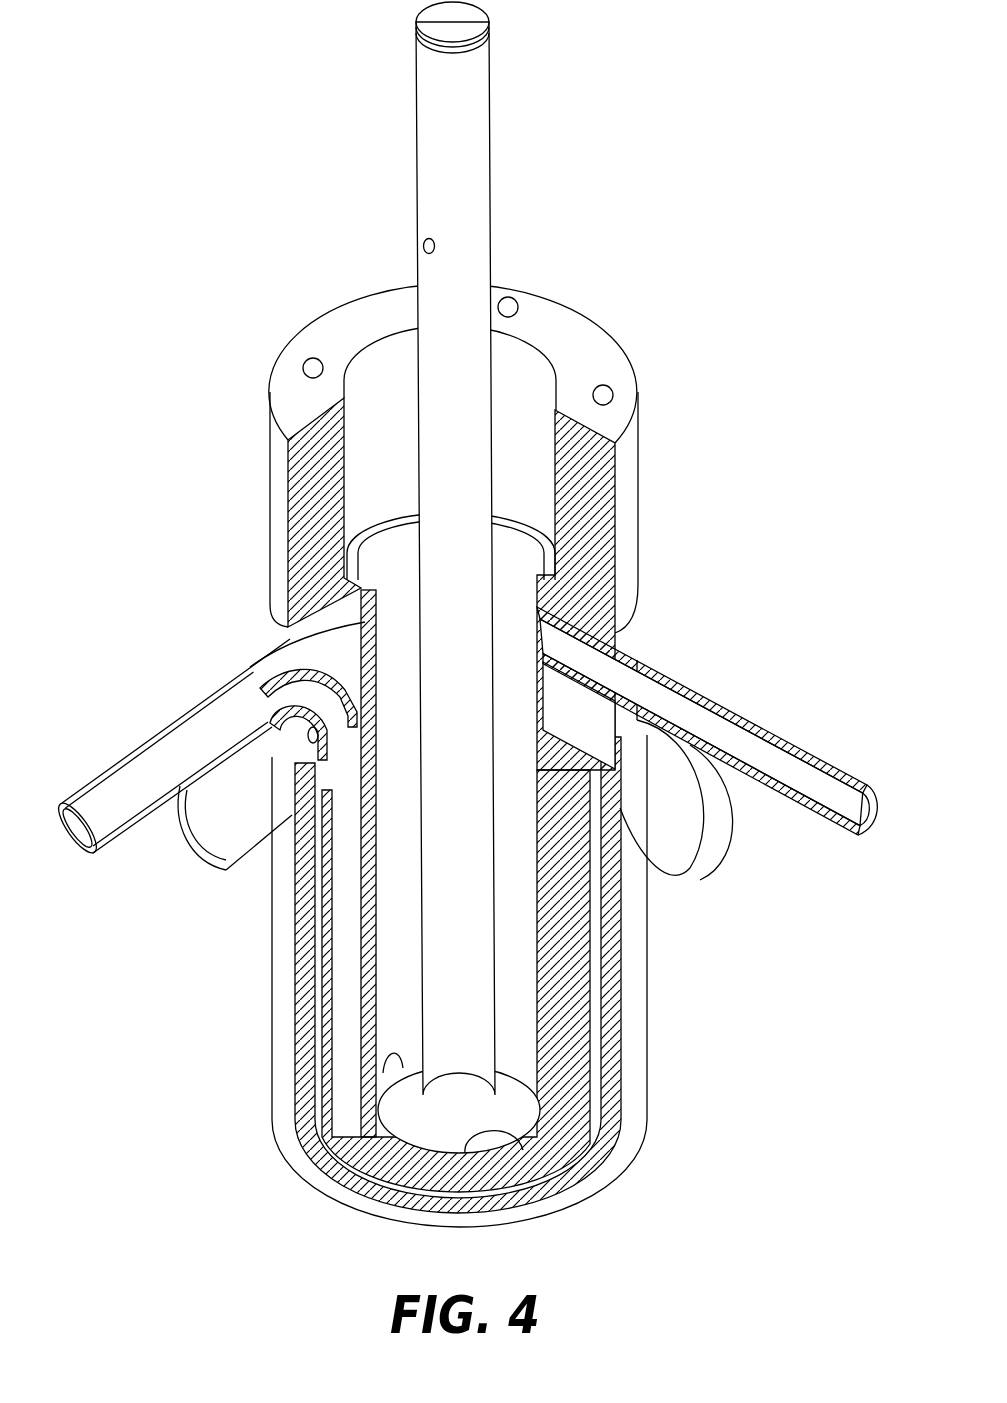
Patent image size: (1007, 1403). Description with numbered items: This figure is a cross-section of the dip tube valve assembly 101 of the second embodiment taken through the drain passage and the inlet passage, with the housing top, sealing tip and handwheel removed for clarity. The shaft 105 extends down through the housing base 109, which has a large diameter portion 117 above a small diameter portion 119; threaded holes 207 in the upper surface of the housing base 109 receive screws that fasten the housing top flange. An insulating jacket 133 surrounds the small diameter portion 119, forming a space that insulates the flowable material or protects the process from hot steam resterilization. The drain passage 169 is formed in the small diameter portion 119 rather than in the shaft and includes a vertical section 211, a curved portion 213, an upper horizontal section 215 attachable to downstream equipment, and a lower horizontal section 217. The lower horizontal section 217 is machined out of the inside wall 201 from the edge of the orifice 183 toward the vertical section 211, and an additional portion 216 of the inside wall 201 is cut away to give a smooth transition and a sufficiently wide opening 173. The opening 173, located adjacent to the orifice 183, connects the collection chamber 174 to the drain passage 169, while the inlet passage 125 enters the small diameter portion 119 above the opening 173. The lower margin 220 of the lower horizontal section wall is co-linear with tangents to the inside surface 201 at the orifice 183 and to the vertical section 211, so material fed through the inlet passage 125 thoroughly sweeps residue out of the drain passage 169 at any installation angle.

The dip tube valve assembly 101 is at (158, 187).
The shaft 105 is at (481, 153).
The housing base 109 is at (637, 1000).
The large diameter portion 117 is at (632, 488).
The small diameter portion 119 is at (577, 1093).
The inlet passage 125 is at (763, 732).
The insulating jacket 133 is at (282, 1057).
The drain passage 169 is at (160, 730).
The opening 173 is at (367, 1128).
The collection chamber 174 is at (517, 1033).
The orifice 183 is at (517, 1140).
The inside wall 201 is at (377, 950).
The threaded holes 207 is at (518, 306).
The vertical section 211 is at (343, 957).
The curved portion 213 is at (330, 702).
The upper horizontal section 215 is at (110, 818).
The additional portion 216 is at (393, 1073).
The lower horizontal section 217 is at (365, 1128).
The lower margin 220 is at (372, 1112).